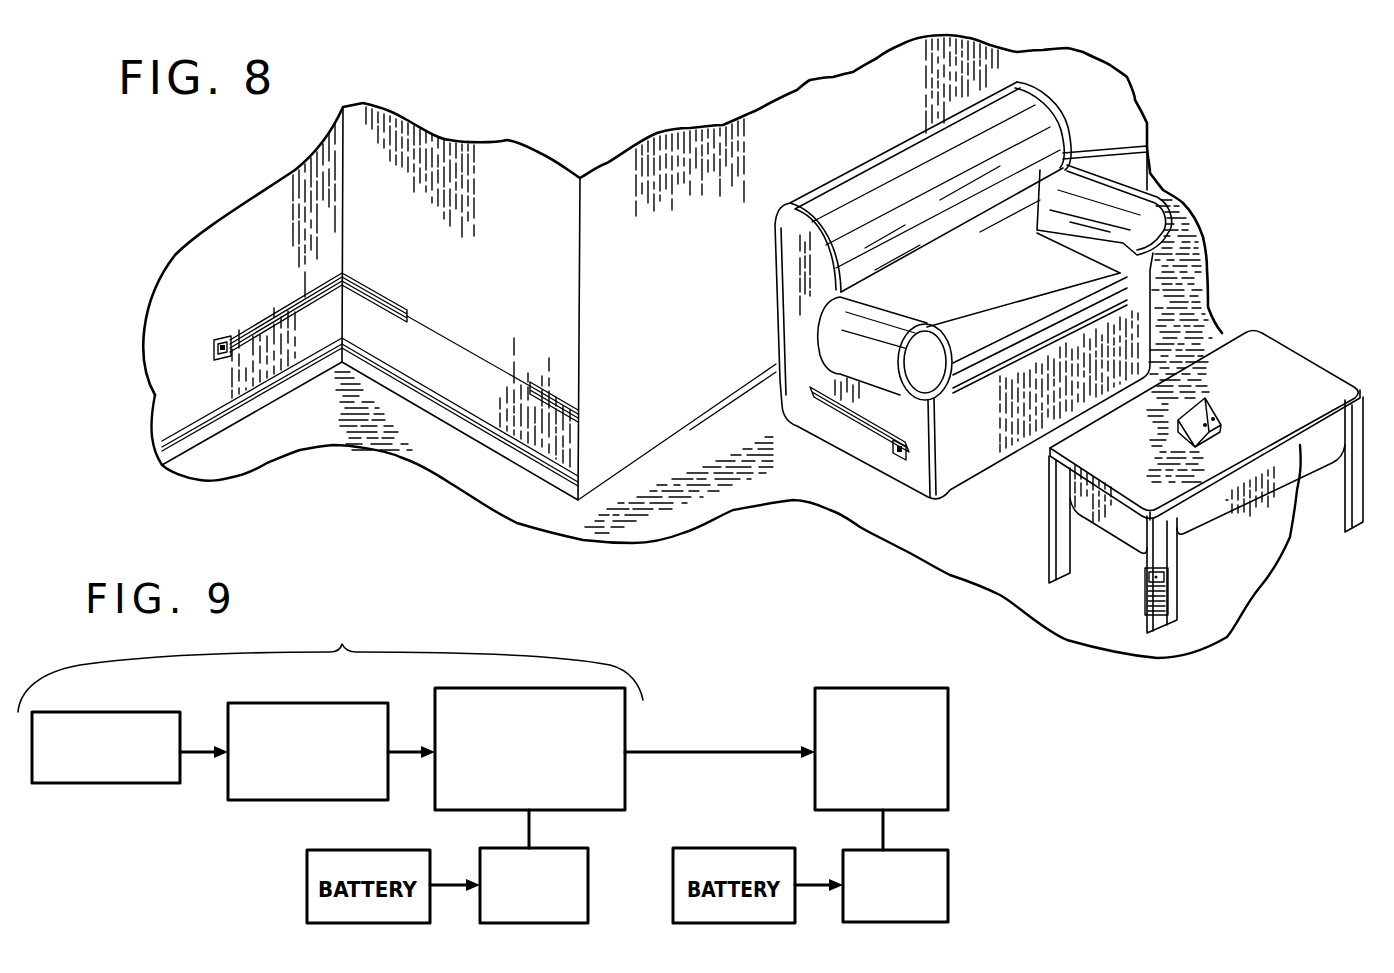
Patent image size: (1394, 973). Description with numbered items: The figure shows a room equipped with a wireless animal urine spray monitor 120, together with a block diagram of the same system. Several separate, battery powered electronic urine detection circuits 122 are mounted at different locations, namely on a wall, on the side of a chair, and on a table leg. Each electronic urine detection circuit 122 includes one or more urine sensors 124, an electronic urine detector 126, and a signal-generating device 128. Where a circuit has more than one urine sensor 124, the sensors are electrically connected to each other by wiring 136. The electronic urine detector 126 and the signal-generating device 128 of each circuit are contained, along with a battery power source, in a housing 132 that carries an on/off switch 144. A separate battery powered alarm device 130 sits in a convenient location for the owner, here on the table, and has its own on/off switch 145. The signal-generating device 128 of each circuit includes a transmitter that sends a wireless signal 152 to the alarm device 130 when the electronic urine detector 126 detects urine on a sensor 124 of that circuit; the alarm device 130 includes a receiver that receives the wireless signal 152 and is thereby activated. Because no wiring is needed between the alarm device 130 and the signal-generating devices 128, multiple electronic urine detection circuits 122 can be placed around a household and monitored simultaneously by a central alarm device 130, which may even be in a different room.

In FIG. 8, the wireless animal urine spray monitor 120 is at (1283, 320).
In FIG. 9, the wireless animal urine spray monitor 120 is at (743, 657).
In FIG. 8, the electronic urine detection circuit 122 is at (705, 464).
In FIG. 9, the electronic urine detection circuit 122 is at (330, 664).
In FIG. 8, the urine sensor 124 is at (378, 292).
In FIG. 9, the urine sensor 124 is at (113, 785).
In FIG. 9, the electronic urine detector 126 is at (310, 800).
In FIG. 9, the signal-generating device 128 is at (626, 767).
In FIG. 8, the alarm device 130 is at (1245, 414).
In FIG. 9, the alarm device 130 is at (949, 750).
In FIG. 8, the housing 132 is at (228, 345).
In FIG. 8, the wiring 136 is at (474, 350).
In FIG. 8, the on/off switch 144 is at (228, 362).
In FIG. 9, the on/off switch 144 is at (589, 870).
In FIG. 8, the on/off switch 145 is at (1220, 410).
In FIG. 9, the on/off switch 145 is at (949, 890).
In FIG. 9, the wireless signal 152 is at (698, 750).